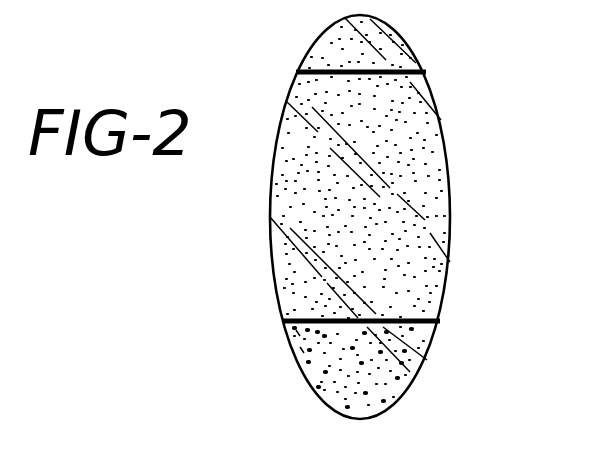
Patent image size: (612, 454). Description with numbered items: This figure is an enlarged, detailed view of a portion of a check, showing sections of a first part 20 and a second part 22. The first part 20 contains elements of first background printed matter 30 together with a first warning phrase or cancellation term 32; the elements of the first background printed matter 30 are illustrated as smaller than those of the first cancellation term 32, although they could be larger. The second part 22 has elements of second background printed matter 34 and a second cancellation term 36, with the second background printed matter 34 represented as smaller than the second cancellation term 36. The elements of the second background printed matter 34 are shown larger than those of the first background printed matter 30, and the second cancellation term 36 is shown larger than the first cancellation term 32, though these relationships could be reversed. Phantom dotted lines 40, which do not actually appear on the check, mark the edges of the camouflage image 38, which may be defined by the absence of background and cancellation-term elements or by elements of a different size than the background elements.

The first part 20 is at (458, 151).
The second part 22 is at (428, 378).
The first background printed matter 30 is at (316, 168).
The first cancellation term 32 is at (340, 93).
The second background printed matter 34 is at (302, 350).
The second cancellation term 36 is at (318, 387).
The camouflage image 38 is at (462, 250).
The phantom dotted lines 40 is at (285, 252).